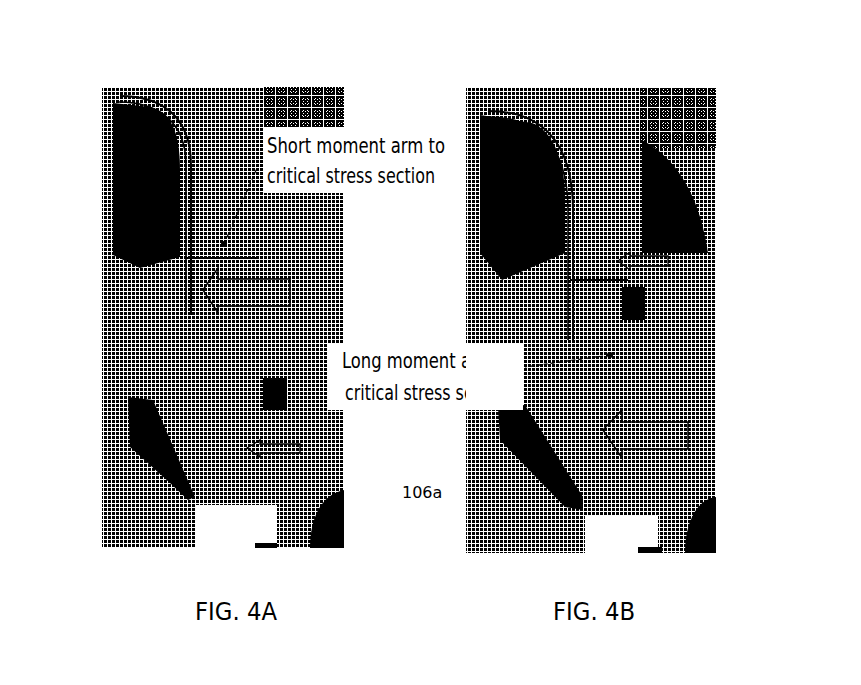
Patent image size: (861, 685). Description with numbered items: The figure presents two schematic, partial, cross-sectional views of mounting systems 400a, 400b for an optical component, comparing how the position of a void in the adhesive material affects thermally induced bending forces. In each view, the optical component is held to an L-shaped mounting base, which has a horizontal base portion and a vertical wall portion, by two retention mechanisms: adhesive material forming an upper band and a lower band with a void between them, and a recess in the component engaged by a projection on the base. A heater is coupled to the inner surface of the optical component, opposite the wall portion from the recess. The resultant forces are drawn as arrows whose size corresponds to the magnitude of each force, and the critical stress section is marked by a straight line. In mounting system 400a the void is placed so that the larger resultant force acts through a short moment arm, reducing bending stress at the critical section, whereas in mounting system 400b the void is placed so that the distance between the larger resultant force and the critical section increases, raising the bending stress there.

In FIG. 4A, the mounting system 400a is at (325, 72).
In FIG. 4B, the mounting system 400b is at (708, 75).